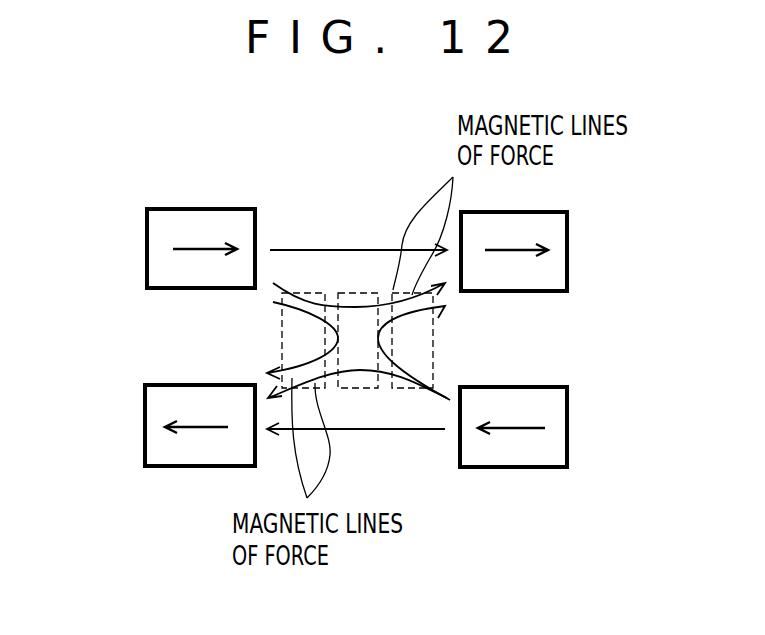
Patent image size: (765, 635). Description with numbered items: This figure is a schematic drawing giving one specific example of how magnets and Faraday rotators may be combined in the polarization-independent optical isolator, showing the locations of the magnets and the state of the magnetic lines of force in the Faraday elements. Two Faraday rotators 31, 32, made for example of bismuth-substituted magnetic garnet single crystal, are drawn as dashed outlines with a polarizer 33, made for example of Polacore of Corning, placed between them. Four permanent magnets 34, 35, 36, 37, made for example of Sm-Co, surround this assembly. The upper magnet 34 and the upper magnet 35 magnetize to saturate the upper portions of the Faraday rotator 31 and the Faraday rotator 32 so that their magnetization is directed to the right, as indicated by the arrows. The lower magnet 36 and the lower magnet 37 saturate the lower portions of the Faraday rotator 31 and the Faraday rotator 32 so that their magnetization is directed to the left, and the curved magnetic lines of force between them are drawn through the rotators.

The Faraday rotator 31 is at (282, 337).
The Faraday rotator 32 is at (433, 335).
The polarizer 33 is at (356, 293).
The permanent magnet 34 is at (145, 250).
The permanent magnet 35 is at (569, 250).
The permanent magnet 36 is at (143, 428).
The permanent magnet 37 is at (569, 420).